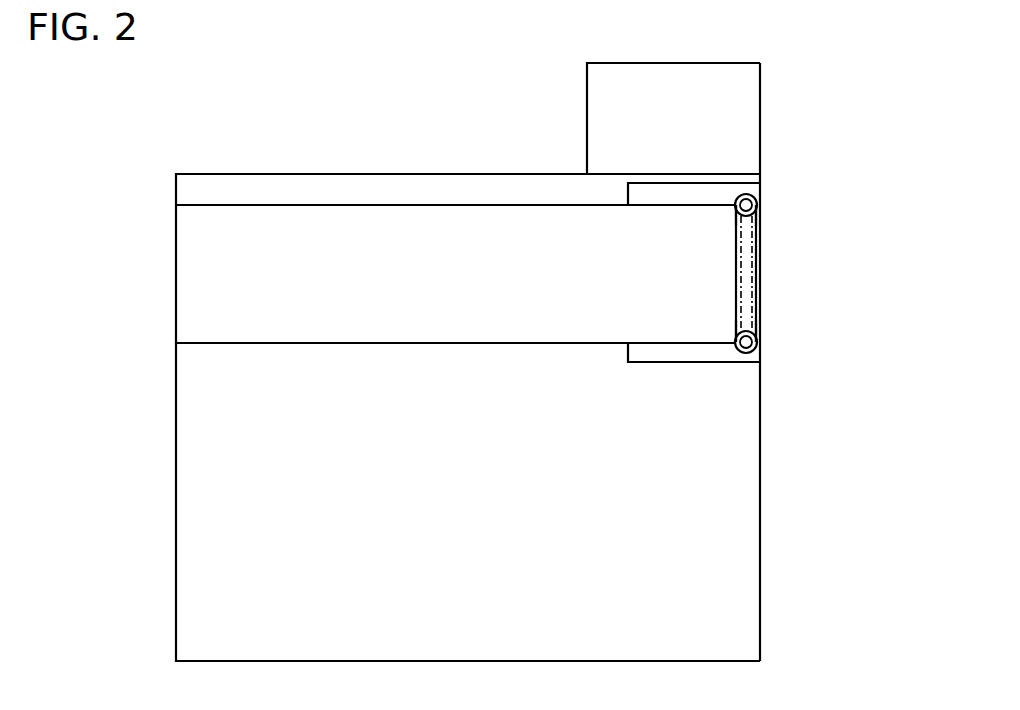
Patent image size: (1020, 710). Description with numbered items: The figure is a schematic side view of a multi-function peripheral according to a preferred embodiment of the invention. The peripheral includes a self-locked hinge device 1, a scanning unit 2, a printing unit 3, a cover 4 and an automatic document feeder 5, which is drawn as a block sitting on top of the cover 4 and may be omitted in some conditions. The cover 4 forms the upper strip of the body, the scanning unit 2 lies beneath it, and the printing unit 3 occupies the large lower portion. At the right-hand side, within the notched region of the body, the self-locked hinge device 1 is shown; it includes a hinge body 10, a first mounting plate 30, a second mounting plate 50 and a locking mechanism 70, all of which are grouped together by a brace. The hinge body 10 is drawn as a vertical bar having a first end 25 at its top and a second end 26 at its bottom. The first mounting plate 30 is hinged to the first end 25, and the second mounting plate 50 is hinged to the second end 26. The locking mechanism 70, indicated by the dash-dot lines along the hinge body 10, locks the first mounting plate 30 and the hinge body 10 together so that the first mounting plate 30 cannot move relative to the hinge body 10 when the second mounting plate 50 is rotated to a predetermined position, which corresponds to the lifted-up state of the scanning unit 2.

The self-locked hinge device 1 is at (860, 212).
The scanning unit 2 is at (190, 270).
The printing unit 3 is at (190, 457).
The cover 4 is at (190, 188).
The automatic document feeder 5 is at (602, 127).
The hinge body 10 is at (760, 266).
The first end 25 is at (738, 217).
The second end 26 is at (738, 328).
The first mounting plate 30 is at (758, 189).
The second mounting plate 50 is at (757, 358).
The locking mechanism 70 is at (761, 302).